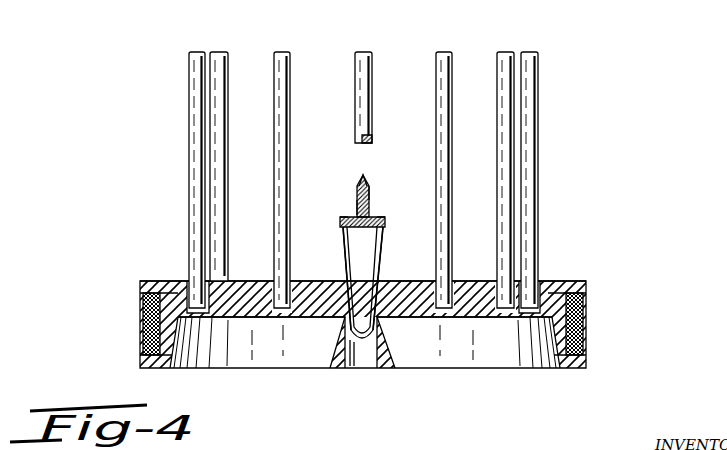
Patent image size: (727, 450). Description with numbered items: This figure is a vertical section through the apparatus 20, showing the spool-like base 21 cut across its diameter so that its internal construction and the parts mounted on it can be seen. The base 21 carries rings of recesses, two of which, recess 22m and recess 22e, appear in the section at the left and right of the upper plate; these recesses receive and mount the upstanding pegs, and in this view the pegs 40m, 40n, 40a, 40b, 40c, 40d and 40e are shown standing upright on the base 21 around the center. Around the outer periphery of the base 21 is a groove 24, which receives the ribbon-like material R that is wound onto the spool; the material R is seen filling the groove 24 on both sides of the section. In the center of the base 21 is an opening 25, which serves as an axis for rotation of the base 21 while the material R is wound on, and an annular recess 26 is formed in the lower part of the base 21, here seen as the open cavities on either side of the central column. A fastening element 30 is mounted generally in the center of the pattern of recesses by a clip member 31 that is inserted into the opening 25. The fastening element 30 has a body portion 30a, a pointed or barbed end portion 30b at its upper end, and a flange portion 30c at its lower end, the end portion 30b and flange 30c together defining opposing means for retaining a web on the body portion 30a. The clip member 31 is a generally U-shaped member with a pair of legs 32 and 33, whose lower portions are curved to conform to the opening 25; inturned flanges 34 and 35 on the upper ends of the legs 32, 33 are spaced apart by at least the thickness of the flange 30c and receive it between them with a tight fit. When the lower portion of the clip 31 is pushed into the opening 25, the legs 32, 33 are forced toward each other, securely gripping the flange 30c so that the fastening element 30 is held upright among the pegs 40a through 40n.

The apparatus 20 is at (598, 281).
The base 21 is at (584, 283).
The recess 22m is at (206, 281).
The recess 22e is at (528, 283).
The groove 24 is at (143, 294).
The ribbon-like material R is at (143, 320).
The opening 25 is at (367, 352).
The annular recess 26 is at (546, 350).
The fastening element 30 is at (372, 186).
The body portion 30a is at (373, 199).
The pointed or barbed end portion 30b is at (366, 176).
The flange portion 30c is at (356, 204).
The clip member 31 is at (384, 273).
The leg 32 is at (383, 246).
The leg 33 is at (344, 246).
The inturned flange 34 is at (346, 220).
The inturned flange 35 is at (362, 280).
The peg 40m is at (197, 52).
The peg 40n is at (219, 52).
The peg 40a is at (283, 52).
The peg 40b is at (363, 52).
The peg 40c is at (444, 52).
The peg 40d is at (507, 52).
The peg 40e is at (538, 160).